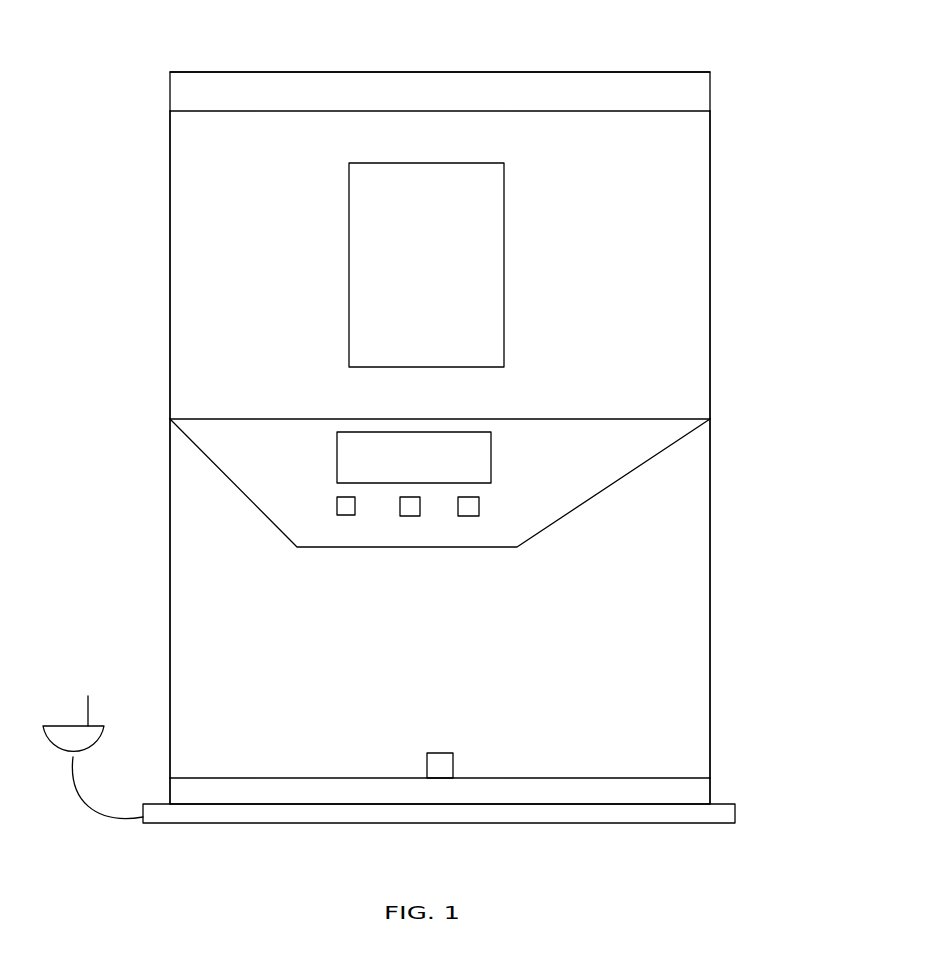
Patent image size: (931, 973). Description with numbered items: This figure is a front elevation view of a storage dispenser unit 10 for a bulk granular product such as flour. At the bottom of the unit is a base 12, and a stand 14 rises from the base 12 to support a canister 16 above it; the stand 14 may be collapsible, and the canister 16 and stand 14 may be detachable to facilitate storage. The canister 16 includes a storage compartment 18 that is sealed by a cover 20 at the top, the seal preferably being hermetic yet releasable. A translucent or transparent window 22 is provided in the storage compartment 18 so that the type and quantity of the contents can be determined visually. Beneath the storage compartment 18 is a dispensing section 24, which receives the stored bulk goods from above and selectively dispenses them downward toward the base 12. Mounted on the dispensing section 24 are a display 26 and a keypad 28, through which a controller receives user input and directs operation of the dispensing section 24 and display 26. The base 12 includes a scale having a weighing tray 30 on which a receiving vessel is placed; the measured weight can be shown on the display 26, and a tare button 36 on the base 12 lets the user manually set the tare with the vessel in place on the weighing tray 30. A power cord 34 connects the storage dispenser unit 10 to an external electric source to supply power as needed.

The storage dispenser unit 10 is at (381, 438).
The base 12 is at (735, 813).
The stand 14 is at (170, 599).
The canister 16 is at (170, 263).
The storage compartment 18 is at (631, 240).
The cover 20 is at (710, 88).
The window 22 is at (504, 268).
The dispensing section 24 is at (543, 531).
The display 26 is at (491, 457).
The keypad 28 is at (335, 496).
The weighing tray 30 is at (710, 790).
The power cord 34 is at (66, 726).
The tare button 36 is at (453, 753).